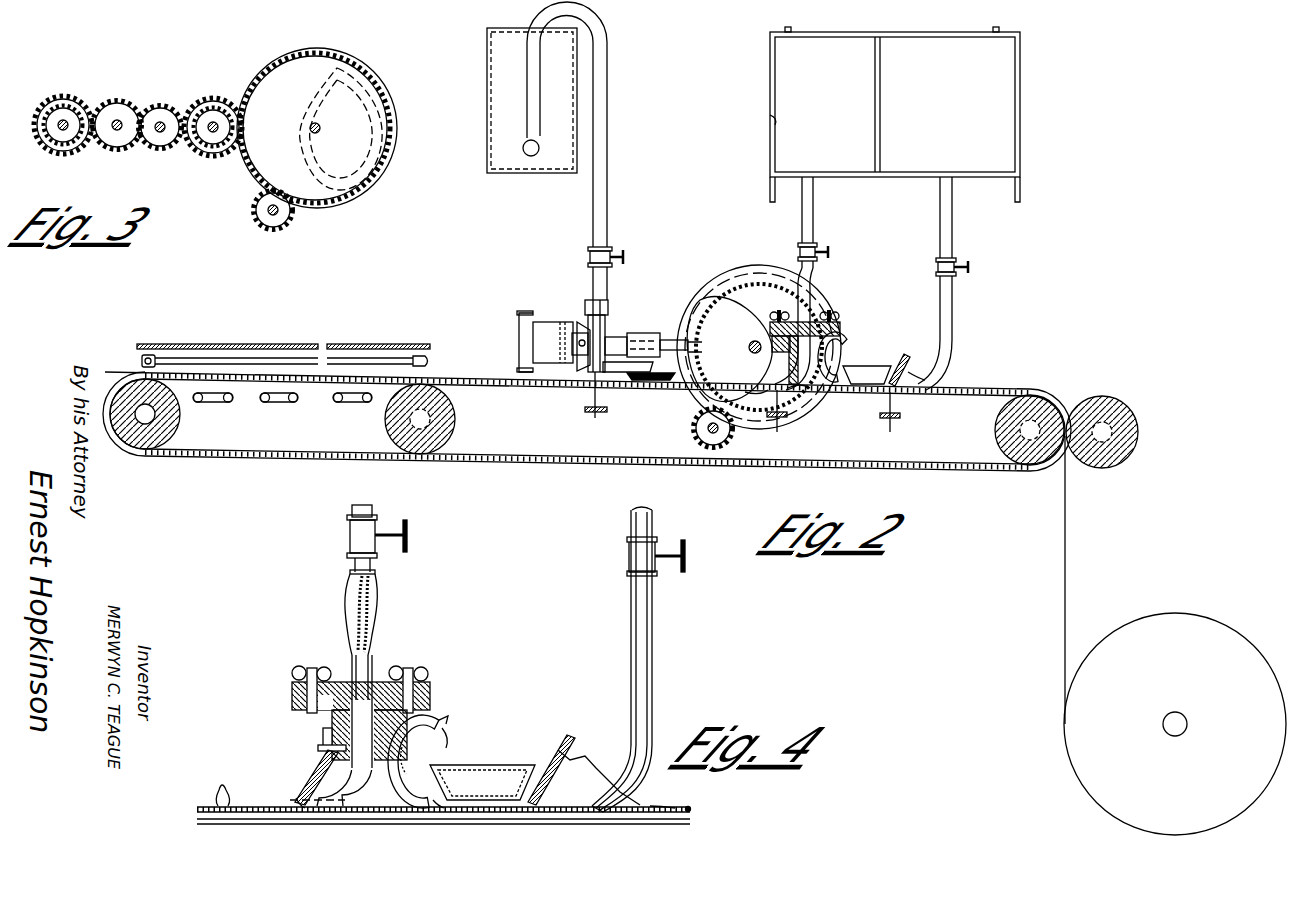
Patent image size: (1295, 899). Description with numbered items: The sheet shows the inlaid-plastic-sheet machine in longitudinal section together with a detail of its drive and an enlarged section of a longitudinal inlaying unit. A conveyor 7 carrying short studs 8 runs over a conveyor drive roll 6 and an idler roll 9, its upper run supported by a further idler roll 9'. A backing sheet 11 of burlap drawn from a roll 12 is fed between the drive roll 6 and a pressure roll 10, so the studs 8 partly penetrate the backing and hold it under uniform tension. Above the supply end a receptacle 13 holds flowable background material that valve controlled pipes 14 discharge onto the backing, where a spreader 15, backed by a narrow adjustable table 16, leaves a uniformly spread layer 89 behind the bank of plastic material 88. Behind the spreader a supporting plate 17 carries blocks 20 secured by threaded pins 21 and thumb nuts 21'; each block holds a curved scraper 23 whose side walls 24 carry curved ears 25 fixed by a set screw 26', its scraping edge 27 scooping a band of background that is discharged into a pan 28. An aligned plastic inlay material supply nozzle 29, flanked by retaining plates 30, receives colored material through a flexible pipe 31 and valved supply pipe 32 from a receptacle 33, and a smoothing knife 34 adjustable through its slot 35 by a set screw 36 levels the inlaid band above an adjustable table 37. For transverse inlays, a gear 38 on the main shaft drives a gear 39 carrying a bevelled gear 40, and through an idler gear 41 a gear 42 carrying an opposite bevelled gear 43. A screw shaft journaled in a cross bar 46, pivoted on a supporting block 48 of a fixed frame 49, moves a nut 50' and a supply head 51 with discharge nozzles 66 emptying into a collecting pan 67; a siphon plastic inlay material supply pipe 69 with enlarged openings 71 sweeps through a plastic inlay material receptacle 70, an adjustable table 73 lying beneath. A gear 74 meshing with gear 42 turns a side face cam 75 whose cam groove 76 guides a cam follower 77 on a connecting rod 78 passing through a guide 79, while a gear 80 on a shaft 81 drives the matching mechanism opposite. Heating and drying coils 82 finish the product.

In FIG. 2, the conveyor drive roll 6 is at (1000, 432).
In FIG. 2, the conveyor 7 is at (554, 462).
In FIG. 4, the conveyor 7 is at (690, 816).
In FIG. 2, the short studs 8 is at (468, 466).
In FIG. 4, the short studs 8 is at (220, 786).
In FIG. 2, the idler roll 9 is at (155, 414).
In FIG. 2, the idler roll 9' is at (433, 419).
In FIG. 2, the pressure roll 10 is at (1122, 414).
In FIG. 2, the backing sheet 11 is at (1066, 548).
In FIG. 4, the backing sheet 11 is at (680, 808).
In FIG. 2, the roll 12 is at (1178, 613).
In FIG. 2, the receptacle 13 is at (1020, 98).
In FIG. 2, the valve controlled pipes 14 is at (953, 318).
In FIG. 4, the valve controlled pipes 14 is at (653, 640).
In FIG. 2, the spreader 15 is at (905, 354).
In FIG. 4, the spreader 15 is at (562, 744).
In FIG. 2, the adjustable table 16 is at (897, 410).
In FIG. 2, the supporting plate 17 is at (843, 329).
In FIG. 4, the supporting plate 17 is at (430, 690).
In FIG. 2, the block 20 is at (790, 336).
In FIG. 4, the block 20 is at (332, 722).
In FIG. 4, the threaded pins 21 is at (364, 677).
In FIG. 2, the thumb nut 21' is at (815, 304).
In FIG. 4, the thumb nut 21' is at (370, 658).
In FIG. 2, the curved scraper 23 is at (848, 341).
In FIG. 4, the curved scraper 23 is at (448, 718).
In FIG. 4, the side walls 24 is at (444, 738).
In FIG. 4, the curved ears 25 is at (410, 738).
In FIG. 4, the set screw 26' is at (414, 764).
In FIG. 4, the scraping edge 27 is at (438, 806).
In FIG. 2, the pan 28 is at (868, 386).
In FIG. 4, the pan 28 is at (505, 768).
In FIG. 2, the plastic inlay material supply nozzle 29 is at (804, 392).
In FIG. 4, the plastic inlay material supply nozzle 29 is at (304, 793).
In FIG. 2, the retaining plate 30 is at (760, 385).
In FIG. 4, the retaining plate 30 is at (362, 792).
In FIG. 2, the flexible pipe 31 is at (814, 276).
In FIG. 4, the flexible pipe 31 is at (372, 614).
In FIG. 2, the valved supply pipe 32 is at (812, 216).
In FIG. 4, the valved supply pipe 32 is at (350, 510).
In FIG. 2, the receptacle 33 is at (770, 116).
In FIG. 2, the smoothing knife 34 is at (752, 351).
In FIG. 4, the smoothing knife 34 is at (324, 768).
In FIG. 4, the slot 35 is at (323, 738).
In FIG. 4, the set screw 36 is at (318, 749).
In FIG. 2, the adjustable table 37 is at (775, 400).
In FIG. 3, the gear 38 is at (118, 104).
In FIG. 3, the gear 39 is at (50, 100).
In FIG. 3, the bevelled gear 40 is at (70, 108).
In FIG. 3, the idler gear 41 is at (158, 106).
In FIG. 3, the gear 42 is at (197, 108).
In FIG. 3, the bevelled gear 43 is at (222, 100).
In FIG. 2, the cross bar 46 is at (580, 325).
In FIG. 2, the supporting block 48 is at (546, 322).
In FIG. 2, the fixed frame 49 is at (518, 320).
In FIG. 2, the nut 50' is at (618, 335).
In FIG. 2, the supply head 51 is at (604, 300).
In FIG. 2, the discharge nozzles 66 is at (620, 375).
In FIG. 2, the collecting pan 67 is at (662, 380).
In FIG. 2, the plastic inlay material supply pipe 69 is at (600, 125).
In FIG. 2, the plastic inlay material receptacle 70 is at (488, 124).
In FIG. 2, the openings 71 is at (539, 149).
In FIG. 2, the adjustable table 73 is at (590, 388).
In FIG. 3, the gear 74 is at (296, 57).
In FIG. 2, the gear 74 is at (762, 418).
In FIG. 3, the side face cam 75 is at (342, 56).
In FIG. 2, the side face cam 75 is at (722, 274).
In FIG. 3, the cam groove 76 is at (337, 72).
In FIG. 2, the cam groove 76 is at (742, 312).
In FIG. 2, the cam follower 77 is at (681, 350).
In FIG. 2, the connecting rod 78 is at (672, 340).
In FIG. 2, the guide 79 is at (642, 333).
In FIG. 3, the gear 80 is at (288, 220).
In FIG. 2, the gear 80 is at (728, 436).
In FIG. 3, the shaft 81 is at (272, 218).
In FIG. 2, the shaft 81 is at (704, 431).
In FIG. 2, the heating and drying coils 82 is at (282, 403).
In FIG. 2, the bank of plastic material 88 is at (912, 372).
In FIG. 4, the bank of plastic material 88 is at (586, 766).
In FIG. 4, the uniformly spread layer 89 is at (482, 783).